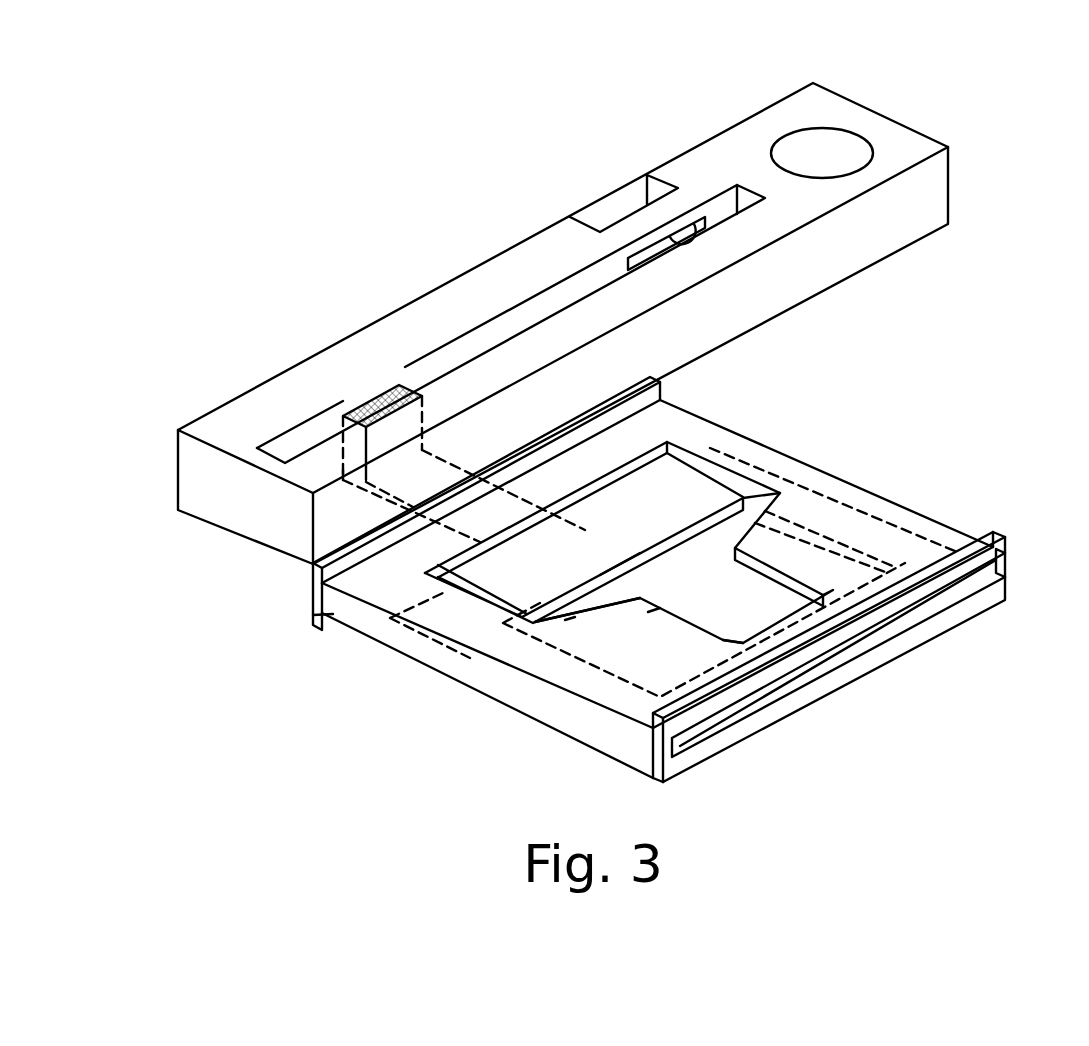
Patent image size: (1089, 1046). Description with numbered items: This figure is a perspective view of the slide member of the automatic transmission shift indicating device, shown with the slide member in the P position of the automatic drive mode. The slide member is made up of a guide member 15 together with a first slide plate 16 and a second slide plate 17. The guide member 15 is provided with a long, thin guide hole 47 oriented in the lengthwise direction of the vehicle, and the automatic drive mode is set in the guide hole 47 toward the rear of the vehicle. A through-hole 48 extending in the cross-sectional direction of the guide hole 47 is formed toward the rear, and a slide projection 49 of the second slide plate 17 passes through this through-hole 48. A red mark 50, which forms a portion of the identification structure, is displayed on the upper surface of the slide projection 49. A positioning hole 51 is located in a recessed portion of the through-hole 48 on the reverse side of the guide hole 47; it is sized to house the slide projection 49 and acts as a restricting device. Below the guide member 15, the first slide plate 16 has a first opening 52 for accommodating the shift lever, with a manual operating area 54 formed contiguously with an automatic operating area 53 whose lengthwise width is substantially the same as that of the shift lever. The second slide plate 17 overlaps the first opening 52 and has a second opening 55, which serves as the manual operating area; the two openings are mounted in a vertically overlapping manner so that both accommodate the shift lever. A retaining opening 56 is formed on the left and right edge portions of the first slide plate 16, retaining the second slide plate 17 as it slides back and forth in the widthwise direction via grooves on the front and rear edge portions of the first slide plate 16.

The guide member 15 is at (902, 122).
The first slide plate 16 is at (920, 512).
The second slide plate 17 is at (713, 487).
The guide hole 47 is at (523, 328).
The through-hole 48 is at (700, 218).
The slide projection 49 is at (337, 448).
The red mark 50 is at (380, 408).
The positioning hole 51 is at (620, 222).
The first opening 52 is at (652, 625).
The automatic operating area 53 is at (715, 630).
The manual operating area 54 is at (513, 607).
The second opening 55 is at (640, 570).
The retaining opening 56 is at (738, 724).